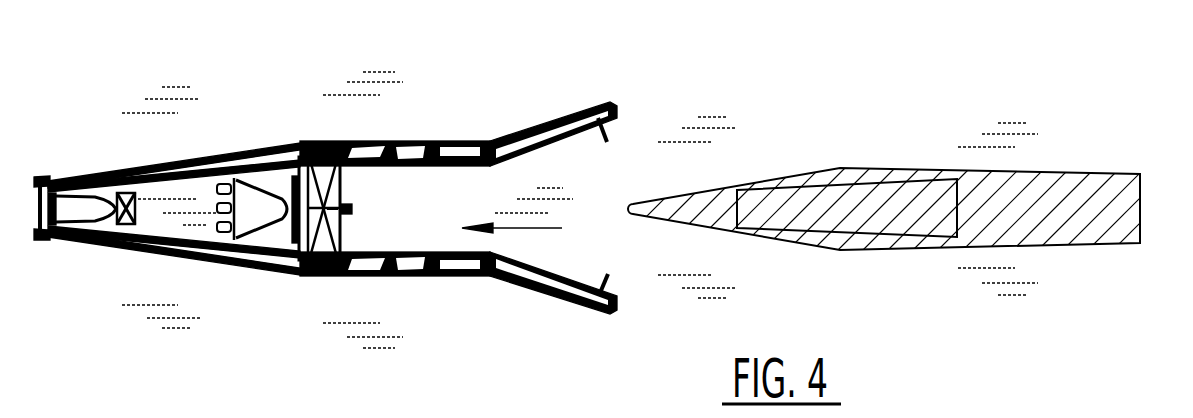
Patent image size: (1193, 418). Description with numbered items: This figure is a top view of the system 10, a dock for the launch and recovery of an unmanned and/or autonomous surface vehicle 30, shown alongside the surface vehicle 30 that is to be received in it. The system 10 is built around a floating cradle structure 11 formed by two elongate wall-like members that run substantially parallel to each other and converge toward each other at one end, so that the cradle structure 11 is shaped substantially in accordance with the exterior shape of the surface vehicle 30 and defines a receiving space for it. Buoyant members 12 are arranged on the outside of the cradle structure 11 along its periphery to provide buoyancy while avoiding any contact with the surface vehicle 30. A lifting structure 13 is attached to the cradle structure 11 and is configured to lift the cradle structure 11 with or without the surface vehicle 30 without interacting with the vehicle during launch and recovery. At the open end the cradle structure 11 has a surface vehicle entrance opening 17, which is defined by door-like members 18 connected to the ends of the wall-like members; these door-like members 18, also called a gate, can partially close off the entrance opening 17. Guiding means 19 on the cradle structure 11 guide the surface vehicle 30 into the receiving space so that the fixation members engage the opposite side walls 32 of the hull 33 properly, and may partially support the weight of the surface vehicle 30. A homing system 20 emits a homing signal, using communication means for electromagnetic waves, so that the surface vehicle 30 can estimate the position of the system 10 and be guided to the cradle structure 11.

The system 10 is at (236, 82).
The cradle structure 11 is at (182, 228).
The buoyant members 12 is at (128, 170).
The lifting structure 13 is at (336, 178).
The surface vehicle entrance opening 17 is at (526, 235).
The door-like members 18 is at (525, 326).
The guiding means 19 is at (85, 192).
The homing system 20 is at (357, 207).
The surface vehicle 30 is at (926, 115).
The side walls 32 is at (875, 167).
The hull 33 is at (1074, 188).